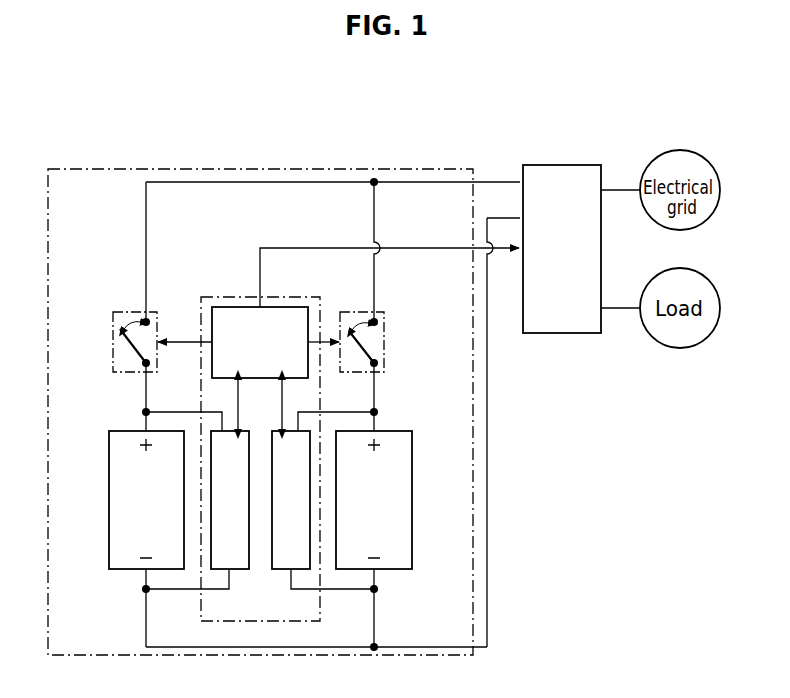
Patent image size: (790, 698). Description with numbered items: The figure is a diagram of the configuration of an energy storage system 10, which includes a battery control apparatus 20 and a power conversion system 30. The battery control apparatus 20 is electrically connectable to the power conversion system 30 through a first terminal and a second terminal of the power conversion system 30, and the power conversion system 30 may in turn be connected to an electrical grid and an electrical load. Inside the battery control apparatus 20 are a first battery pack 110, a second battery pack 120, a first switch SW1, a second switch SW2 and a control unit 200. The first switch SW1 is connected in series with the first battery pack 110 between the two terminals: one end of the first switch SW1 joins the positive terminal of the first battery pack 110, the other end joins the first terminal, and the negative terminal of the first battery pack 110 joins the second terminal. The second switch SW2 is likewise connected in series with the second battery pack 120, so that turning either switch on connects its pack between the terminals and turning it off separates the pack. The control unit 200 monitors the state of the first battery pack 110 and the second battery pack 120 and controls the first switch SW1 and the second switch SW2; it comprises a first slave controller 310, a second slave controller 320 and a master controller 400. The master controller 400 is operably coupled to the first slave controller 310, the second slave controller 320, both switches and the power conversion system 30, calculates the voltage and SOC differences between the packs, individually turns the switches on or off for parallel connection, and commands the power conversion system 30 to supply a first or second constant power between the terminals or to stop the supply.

The energy storage system 10 is at (164, 109).
The battery control apparatus 20 is at (101, 169).
The power conversion system 30 is at (562, 165).
The first battery pack 110 is at (109, 468).
The second battery pack 120 is at (412, 468).
The control unit 200 is at (215, 297).
The first slave controller 310 is at (243, 570).
The second slave controller 320 is at (283, 570).
The master controller 400 is at (298, 297).
The first switch SW1 is at (113, 342).
The second switch SW2 is at (386, 342).